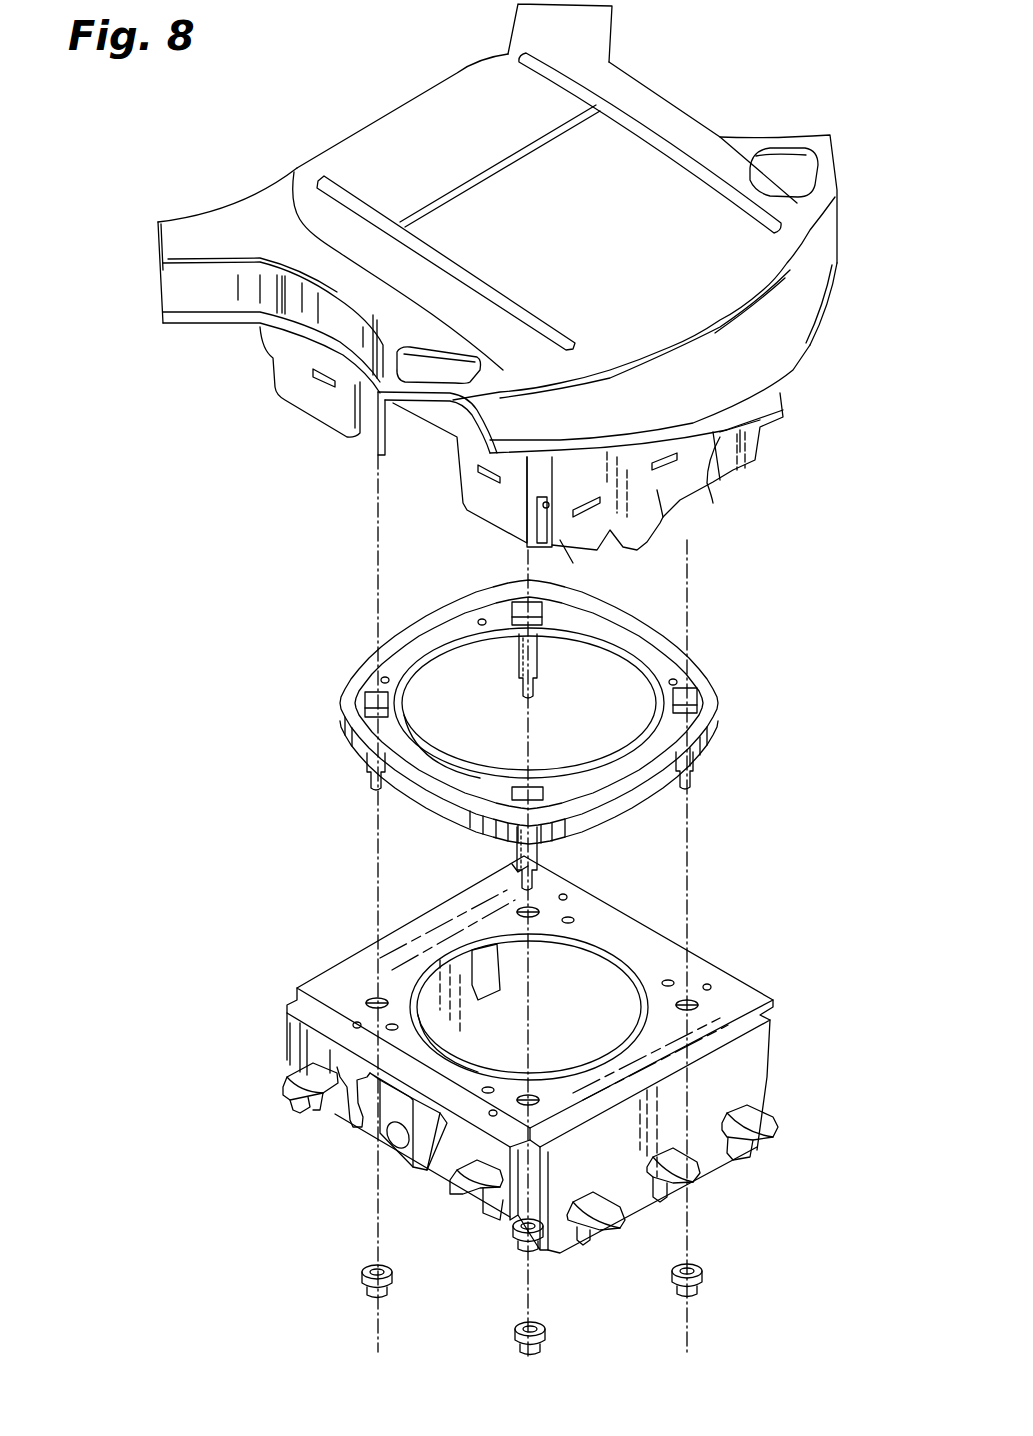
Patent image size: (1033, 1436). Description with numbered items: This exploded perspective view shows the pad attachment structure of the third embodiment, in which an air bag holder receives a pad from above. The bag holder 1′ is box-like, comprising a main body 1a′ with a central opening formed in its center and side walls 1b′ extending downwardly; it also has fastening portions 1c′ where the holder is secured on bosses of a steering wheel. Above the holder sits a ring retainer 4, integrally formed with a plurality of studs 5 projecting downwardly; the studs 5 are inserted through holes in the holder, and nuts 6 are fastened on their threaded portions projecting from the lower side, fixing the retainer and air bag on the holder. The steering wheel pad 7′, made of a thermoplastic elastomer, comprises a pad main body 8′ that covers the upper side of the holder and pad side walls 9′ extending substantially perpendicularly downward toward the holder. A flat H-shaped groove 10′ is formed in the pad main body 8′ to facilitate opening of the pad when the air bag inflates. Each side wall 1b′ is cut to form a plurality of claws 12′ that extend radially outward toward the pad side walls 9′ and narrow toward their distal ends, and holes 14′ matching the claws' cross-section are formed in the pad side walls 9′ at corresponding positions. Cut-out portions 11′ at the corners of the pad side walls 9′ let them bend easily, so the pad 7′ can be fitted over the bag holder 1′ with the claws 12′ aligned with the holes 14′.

The steering wheel pad 7′ is at (235, 155).
The pad main body 8′ is at (390, 117).
The groove 10′ is at (635, 117).
The pad side wall 9′ is at (262, 327).
The holes 14′ is at (318, 385).
The cut-out portions 11′ is at (545, 503).
The ring retainer 4 is at (628, 612).
The studs 5 is at (518, 660).
The bag holder 1′ is at (723, 945).
The main body 1a′ is at (620, 905).
The side walls 1b′ is at (760, 1043).
The fastening portions 1c′ is at (396, 1155).
The claws 12′ is at (283, 1093).
The nuts 6 is at (513, 1237).